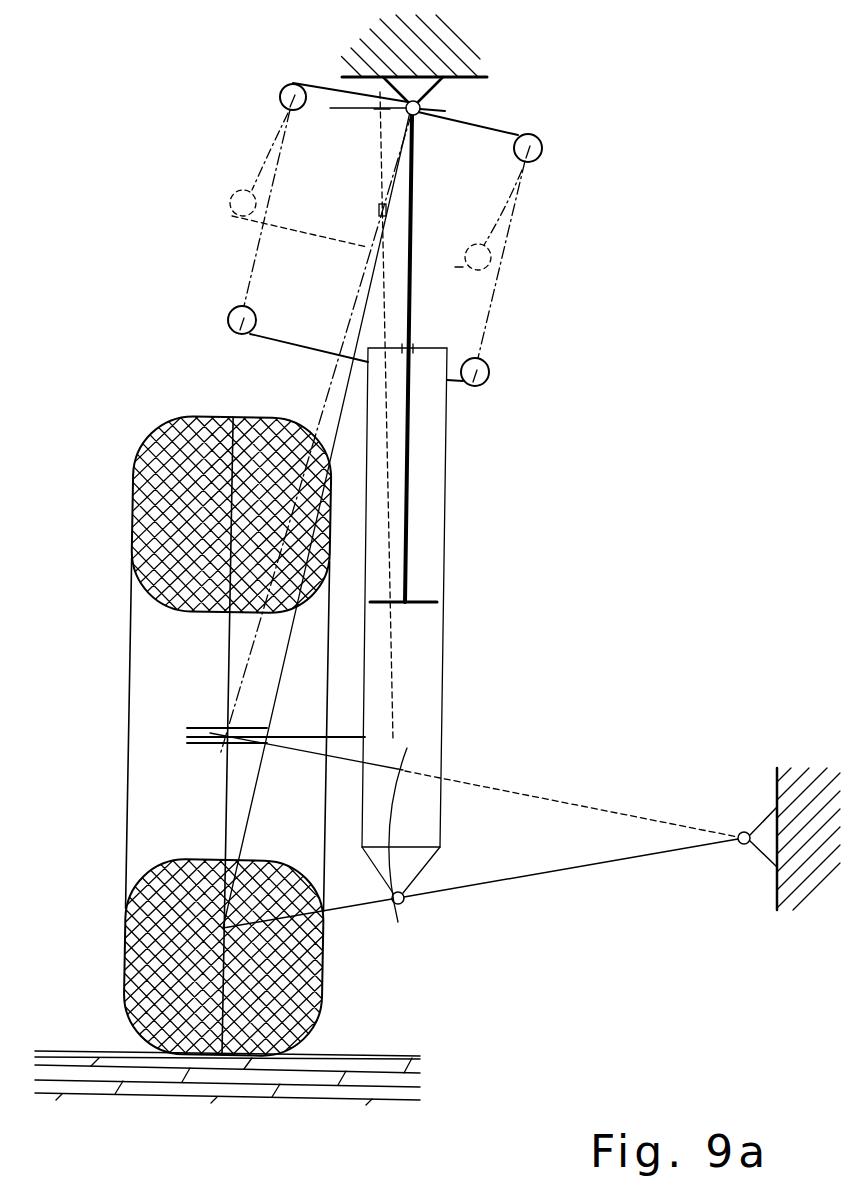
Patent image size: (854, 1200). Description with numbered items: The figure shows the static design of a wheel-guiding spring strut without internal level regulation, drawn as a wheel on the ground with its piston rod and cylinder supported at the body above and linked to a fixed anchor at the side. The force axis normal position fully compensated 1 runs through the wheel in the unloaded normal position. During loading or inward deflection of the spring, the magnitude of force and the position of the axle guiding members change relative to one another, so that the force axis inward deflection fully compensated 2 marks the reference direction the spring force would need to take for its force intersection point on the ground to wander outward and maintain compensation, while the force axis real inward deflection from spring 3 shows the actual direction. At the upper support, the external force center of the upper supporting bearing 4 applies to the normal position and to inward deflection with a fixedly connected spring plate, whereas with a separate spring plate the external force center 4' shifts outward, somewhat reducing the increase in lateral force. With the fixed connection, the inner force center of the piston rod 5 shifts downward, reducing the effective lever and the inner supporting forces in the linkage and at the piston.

The force axis normal position fully compensated 1 is at (250, 820).
The force axis inward deflection fully compensated 2 is at (292, 506).
The force axis real inward deflection from spring 3 is at (380, 153).
The external force center of upper supporting bearing 4 is at (486, 102).
The external force center of upper support bearing with separate spring plate 4' is at (320, 65).
The inner force center of piston rod 5 is at (380, 210).